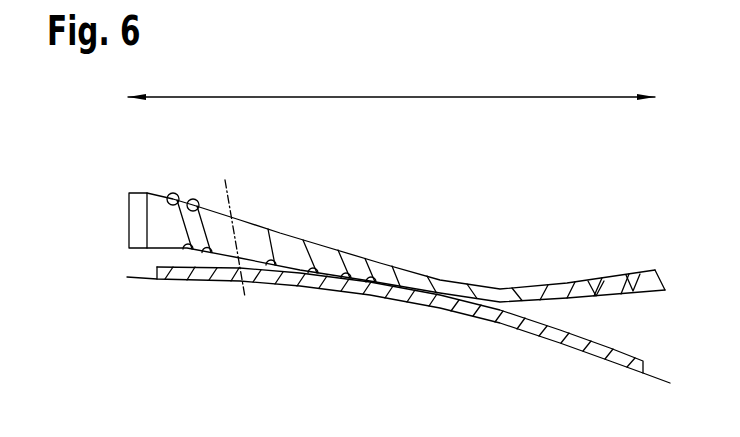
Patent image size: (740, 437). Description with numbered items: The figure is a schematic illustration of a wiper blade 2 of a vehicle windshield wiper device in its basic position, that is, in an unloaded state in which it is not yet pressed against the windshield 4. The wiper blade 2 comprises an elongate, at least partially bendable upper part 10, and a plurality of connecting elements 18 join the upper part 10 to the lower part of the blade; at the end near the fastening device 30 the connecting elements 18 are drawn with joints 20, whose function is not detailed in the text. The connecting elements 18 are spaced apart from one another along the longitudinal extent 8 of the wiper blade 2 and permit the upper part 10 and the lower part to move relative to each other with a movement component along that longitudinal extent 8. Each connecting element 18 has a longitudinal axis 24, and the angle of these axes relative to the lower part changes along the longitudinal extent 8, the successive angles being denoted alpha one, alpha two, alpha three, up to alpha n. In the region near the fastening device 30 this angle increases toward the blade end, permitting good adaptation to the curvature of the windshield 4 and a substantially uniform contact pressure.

The wiper blade 2 is at (542, 207).
The windshield 4 is at (547, 332).
The longitudinal extent 8 is at (392, 97).
The upper part 10 is at (490, 283).
The connecting elements 18 is at (322, 250).
The joint 20 is at (173, 192).
The longitudinal axes 24 is at (240, 205).
The fastening device 30 is at (137, 225).